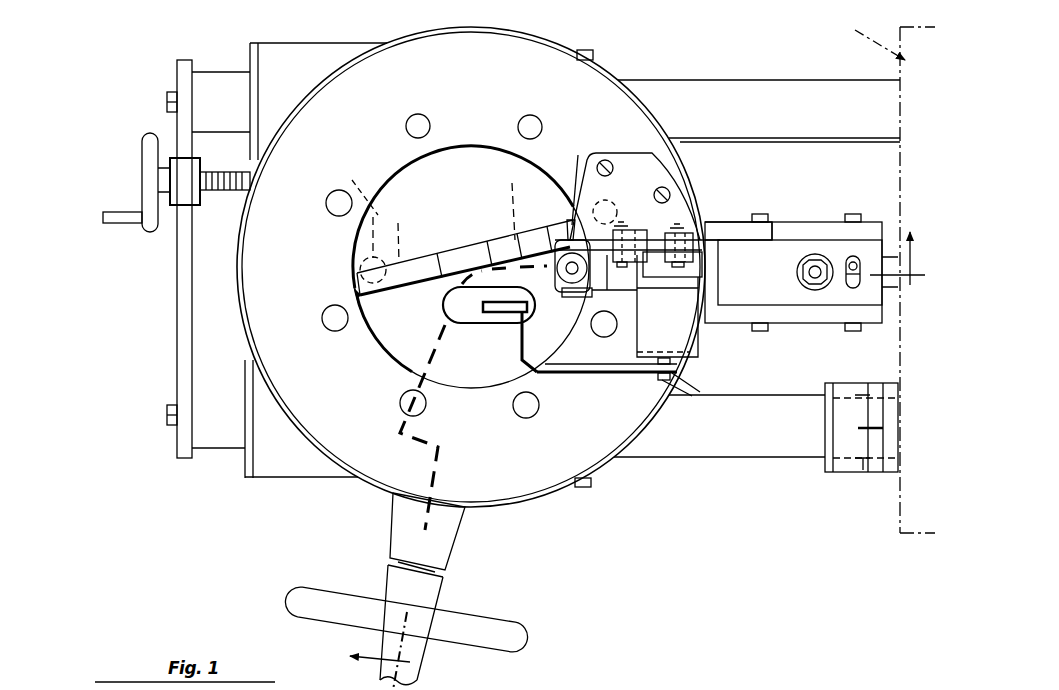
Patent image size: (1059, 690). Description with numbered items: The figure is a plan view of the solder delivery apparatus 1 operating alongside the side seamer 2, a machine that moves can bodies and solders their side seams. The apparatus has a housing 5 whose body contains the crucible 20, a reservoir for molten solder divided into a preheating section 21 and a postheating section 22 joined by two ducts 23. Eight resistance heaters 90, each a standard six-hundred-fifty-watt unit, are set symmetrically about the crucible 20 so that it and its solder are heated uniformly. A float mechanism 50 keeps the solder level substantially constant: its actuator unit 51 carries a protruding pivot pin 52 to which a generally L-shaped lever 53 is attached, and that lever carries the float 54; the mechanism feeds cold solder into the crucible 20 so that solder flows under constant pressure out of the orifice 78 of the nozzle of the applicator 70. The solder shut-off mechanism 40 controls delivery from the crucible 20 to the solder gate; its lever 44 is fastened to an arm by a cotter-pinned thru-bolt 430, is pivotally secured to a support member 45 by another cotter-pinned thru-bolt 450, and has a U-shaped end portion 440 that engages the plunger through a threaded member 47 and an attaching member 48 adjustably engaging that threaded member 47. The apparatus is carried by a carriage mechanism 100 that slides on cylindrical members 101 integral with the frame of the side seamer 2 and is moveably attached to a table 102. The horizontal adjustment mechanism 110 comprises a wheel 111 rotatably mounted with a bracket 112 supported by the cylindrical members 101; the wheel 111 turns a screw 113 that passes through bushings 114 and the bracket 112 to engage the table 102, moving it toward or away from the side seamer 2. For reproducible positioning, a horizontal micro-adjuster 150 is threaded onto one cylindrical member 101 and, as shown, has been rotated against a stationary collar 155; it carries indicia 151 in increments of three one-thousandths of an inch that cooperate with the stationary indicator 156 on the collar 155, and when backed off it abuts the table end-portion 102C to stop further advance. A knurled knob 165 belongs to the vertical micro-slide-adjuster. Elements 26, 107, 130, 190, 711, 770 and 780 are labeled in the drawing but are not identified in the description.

The solder delivery apparatus 1 is at (640, 52).
The side seamer 2 is at (629, 346).
The housing 5 is at (808, 220).
The crucible 20 is at (393, 363).
The preheating section 21 is at (406, 185).
The postheating section 22 is at (352, 328).
The ducts 23 is at (444, 226).
The bar 26 is at (458, 250).
The solder shut-off mechanism 40 is at (704, 214).
The lever 44 is at (690, 207).
The support member 45 is at (645, 263).
The threaded member 47 is at (563, 277).
The attaching member 48 is at (571, 240).
The float mechanism 50 is at (695, 338).
The actuator unit 51 is at (686, 346).
The pivot pin 52 is at (652, 425).
The L-shaped lever 53 is at (565, 385).
The float 54 is at (465, 302).
The applicator 70 is at (842, 287).
The orifice 78 is at (720, 689).
The resistance heaters 90 is at (520, 113).
The carriage mechanism 100 is at (390, 525).
The cylindrical members 101 is at (208, 72).
The table 102 is at (278, 458).
The table end-portion 102C is at (592, 487).
The handle shaft 107 is at (452, 540).
The horizontal adjustment mechanism 110 is at (224, 197).
The wheel 111 is at (140, 175).
The bracket 112 is at (185, 340).
The screw 113 is at (255, 186).
The bushings 114 is at (172, 178).
The handle bar 130 is at (482, 625).
The horizontal micro-adjuster 150 is at (825, 474).
The indicia 151 is at (866, 462).
The stationary collar 155 is at (878, 440).
The stationary indicator 156 is at (876, 425).
The knurled knob 165 is at (352, 188).
The bracket plate 190 is at (608, 200).
The cotter-pinned thru-bolt 430 is at (708, 226).
The U-shaped end portion 440 is at (596, 300).
The cotter-pinned thru-bolt 450 is at (622, 224).
The element 711 is at (800, 689).
The element 770 is at (587, 682).
The element 780 is at (650, 689).